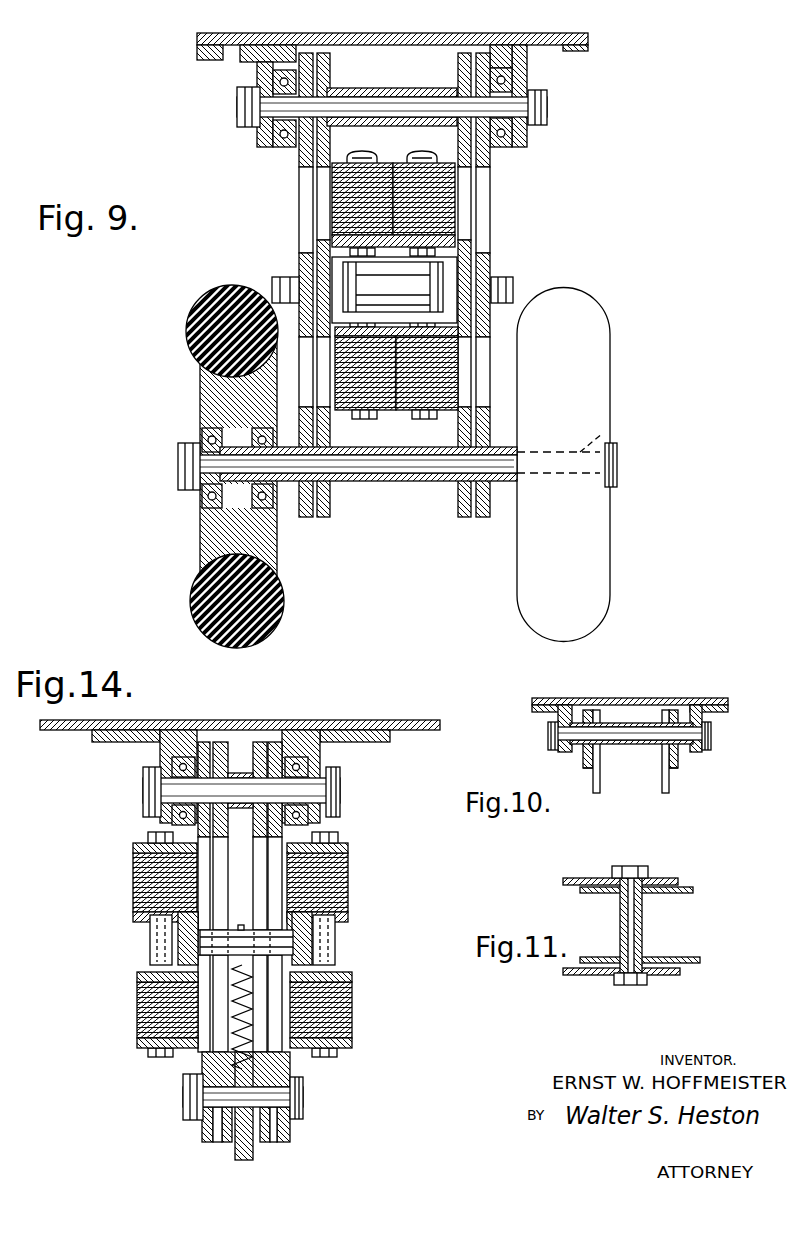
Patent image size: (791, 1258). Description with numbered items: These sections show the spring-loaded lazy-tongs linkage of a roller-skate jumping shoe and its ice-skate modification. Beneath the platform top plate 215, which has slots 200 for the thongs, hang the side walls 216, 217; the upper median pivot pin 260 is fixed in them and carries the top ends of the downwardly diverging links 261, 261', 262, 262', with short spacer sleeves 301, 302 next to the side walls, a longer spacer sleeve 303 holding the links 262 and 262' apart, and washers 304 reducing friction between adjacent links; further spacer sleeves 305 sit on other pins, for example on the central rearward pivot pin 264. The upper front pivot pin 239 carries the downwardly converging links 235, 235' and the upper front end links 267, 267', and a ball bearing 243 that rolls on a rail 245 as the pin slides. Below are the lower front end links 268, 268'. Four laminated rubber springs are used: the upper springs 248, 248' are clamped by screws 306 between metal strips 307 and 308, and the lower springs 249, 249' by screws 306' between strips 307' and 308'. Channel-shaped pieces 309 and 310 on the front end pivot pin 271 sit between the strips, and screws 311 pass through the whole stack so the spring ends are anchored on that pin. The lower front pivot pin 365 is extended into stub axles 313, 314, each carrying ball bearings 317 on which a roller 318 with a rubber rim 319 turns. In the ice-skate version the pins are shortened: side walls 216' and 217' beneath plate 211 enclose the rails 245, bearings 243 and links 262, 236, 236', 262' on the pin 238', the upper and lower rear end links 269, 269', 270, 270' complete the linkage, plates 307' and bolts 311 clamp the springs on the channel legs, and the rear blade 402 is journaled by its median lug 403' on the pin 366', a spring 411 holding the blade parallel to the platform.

In FIG. 9, the slots 200 is at (226, 42).
In FIG. 9, the platform top plate 215 is at (275, 40).
In FIG. 9, the upper front end link 267 is at (302, 77).
In FIG. 9, the upper front end link 267' is at (503, 77).
In FIG. 9, the downwardly converging link 235 is at (337, 150).
In FIG. 9, the downwardly converging link 235' is at (450, 150).
In FIG. 9, the upper front pivot pin 239 is at (517, 100).
In FIG. 9, the ball bearing 243 is at (500, 145).
In FIG. 14, the ball bearing 243 is at (160, 778).
In FIG. 9, the screws 311 is at (358, 158).
In FIG. 14, the screws 311 is at (328, 937).
In FIG. 9, the screws 306 is at (392, 230).
In FIG. 9, the metal strip 307 is at (431, 146).
In FIG. 9, the upper laminated rubber spring 248 is at (316, 199).
In FIG. 14, the upper laminated rubber spring 248 is at (137, 882).
In FIG. 9, the upper laminated rubber spring 248' is at (471, 199).
In FIG. 14, the upper laminated rubber spring 248' is at (347, 882).
In FIG. 9, the lower front end link 268 is at (288, 310).
In FIG. 9, the lower front end link 268' is at (526, 313).
In FIG. 9, the metal strip 308 is at (436, 230).
In FIG. 9, the strip 308' is at (428, 343).
In FIG. 9, the channel-shaped piece 310 is at (340, 270).
In FIG. 14, the channel-shaped piece 310 is at (137, 976).
In FIG. 9, the channel-shaped piece 309 is at (452, 264).
In FIG. 14, the channel-shaped piece 309 is at (347, 972).
In FIG. 9, the front end pivot pin 271 is at (515, 282).
In FIG. 9, the lower laminated rubber spring 249 is at (339, 373).
In FIG. 14, the lower laminated rubber spring 249 is at (137, 1010).
In FIG. 9, the lower laminated rubber spring 249' is at (481, 373).
In FIG. 14, the lower laminated rubber spring 249' is at (350, 1010).
In FIG. 9, the screws 306' is at (387, 427).
In FIG. 9, the strip 307' is at (468, 396).
In FIG. 14, the strip 307' is at (279, 944).
In FIG. 9, the ball bearings 317 is at (206, 433).
In FIG. 9, the stub axle 314 is at (603, 433).
In FIG. 9, the stub axle 313 is at (180, 474).
In FIG. 9, the lower front pivot pin 365 is at (370, 468).
In FIG. 9, the spacer sleeve 305 is at (434, 484).
In FIG. 11, the spacer sleeve 305 is at (643, 918).
In FIG. 9, the roller 318 is at (201, 528).
In FIG. 9, the rubber rim 319 is at (192, 606).
In FIG. 9, the downwardly diverging link 261 is at (318, 490).
In FIG. 10, the downwardly diverging link 261 is at (566, 763).
In FIG. 9, the downwardly diverging link 261' is at (483, 485).
In FIG. 10, the downwardly diverging link 261' is at (707, 768).
In FIG. 14, the frame plate 211 is at (398, 718).
In FIG. 14, the bracket 217' is at (121, 747).
In FIG. 14, the side wall 216' is at (362, 745).
In FIG. 14, the rail 245 is at (177, 730).
In FIG. 14, the downwardly converging link 236 is at (200, 868).
In FIG. 11, the downwardly converging link 236 is at (621, 928).
In FIG. 14, the downwardly converging link 236' is at (306, 867).
In FIG. 14, the upper rear end link 269 is at (238, 867).
In FIG. 14, the upper rear end link 269' is at (279, 872).
In FIG. 14, the shortened upper rear pivot pin 238' is at (206, 792).
In FIG. 14, the spring 411 is at (237, 1020).
In FIG. 14, the median lug 403' is at (282, 1069).
In FIG. 14, the shortened lower rear pivot pin 366' is at (276, 1097).
In FIG. 14, the rear blade 402 is at (242, 1160).
In FIG. 14, the lower rear end link 270 is at (187, 1142).
In FIG. 14, the lower rear end link 270' is at (308, 1133).
In FIG. 14, the downwardly diverging link 262 is at (203, 1149).
In FIG. 10, the downwardly diverging link 262 is at (619, 757).
In FIG. 11, the downwardly diverging link 262 is at (654, 948).
In FIG. 14, the downwardly diverging link 262' is at (299, 1149).
In FIG. 10, the downwardly diverging link 262' is at (697, 758).
In FIG. 11, the downwardly diverging link 262' is at (665, 886).
In FIG. 10, the short spacer sleeve 301 is at (686, 718).
In FIG. 10, the short spacer sleeve 302 is at (578, 720).
In FIG. 10, the longer spacer sleeve 303 is at (628, 722).
In FIG. 10, the washer 304 is at (670, 718).
In FIG. 11, the washer 304 is at (652, 880).
In FIG. 10, the platform side wall 217 is at (532, 725).
In FIG. 10, the platform side wall 216 is at (731, 728).
In FIG. 10, the upper median pivot pin 260 is at (565, 735).
In FIG. 11, the central rearward pivot pin 264 is at (629, 986).